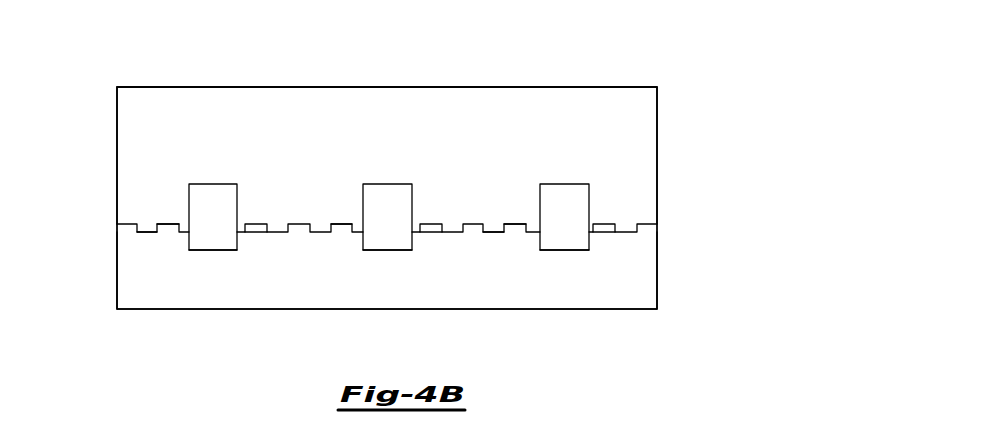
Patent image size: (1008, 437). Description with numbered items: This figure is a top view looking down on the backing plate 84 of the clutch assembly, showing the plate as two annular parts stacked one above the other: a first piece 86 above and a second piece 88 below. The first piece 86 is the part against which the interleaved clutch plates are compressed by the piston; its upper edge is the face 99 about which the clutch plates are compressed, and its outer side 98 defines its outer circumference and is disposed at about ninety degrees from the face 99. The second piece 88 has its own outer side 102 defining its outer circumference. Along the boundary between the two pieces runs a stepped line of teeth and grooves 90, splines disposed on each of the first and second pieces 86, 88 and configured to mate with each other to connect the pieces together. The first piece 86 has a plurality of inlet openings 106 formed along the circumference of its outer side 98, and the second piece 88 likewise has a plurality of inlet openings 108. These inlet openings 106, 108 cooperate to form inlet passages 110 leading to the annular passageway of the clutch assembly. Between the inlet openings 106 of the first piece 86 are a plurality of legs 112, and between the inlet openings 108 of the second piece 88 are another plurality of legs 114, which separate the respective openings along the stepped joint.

The backing plate 84 is at (680, 78).
The first piece 86 is at (131, 187).
The second piece 88 is at (130, 295).
The teeth and grooves 90 is at (495, 237).
The outer side 98 is at (116, 120).
The face 99 is at (243, 87).
The outer side 102 is at (116, 248).
The inlet openings 106 is at (189, 196).
The inlet openings 108 is at (190, 236).
The inlet passages 110 is at (226, 208).
The legs 112 is at (163, 221).
The legs 114 is at (145, 236).